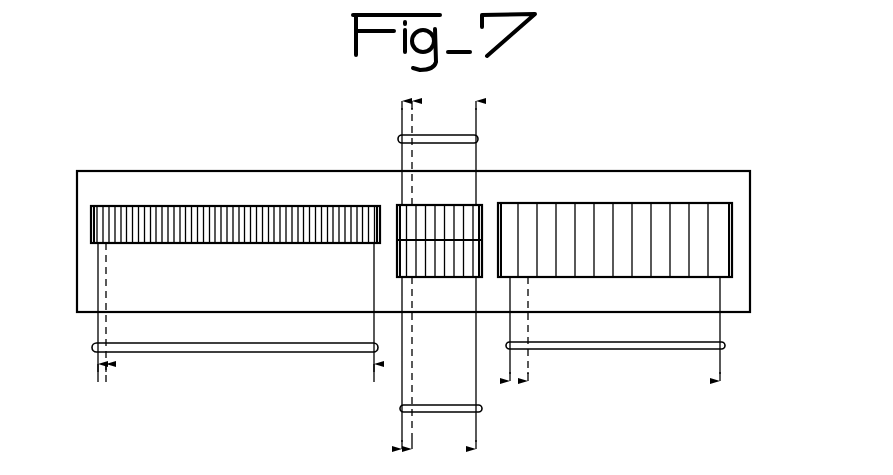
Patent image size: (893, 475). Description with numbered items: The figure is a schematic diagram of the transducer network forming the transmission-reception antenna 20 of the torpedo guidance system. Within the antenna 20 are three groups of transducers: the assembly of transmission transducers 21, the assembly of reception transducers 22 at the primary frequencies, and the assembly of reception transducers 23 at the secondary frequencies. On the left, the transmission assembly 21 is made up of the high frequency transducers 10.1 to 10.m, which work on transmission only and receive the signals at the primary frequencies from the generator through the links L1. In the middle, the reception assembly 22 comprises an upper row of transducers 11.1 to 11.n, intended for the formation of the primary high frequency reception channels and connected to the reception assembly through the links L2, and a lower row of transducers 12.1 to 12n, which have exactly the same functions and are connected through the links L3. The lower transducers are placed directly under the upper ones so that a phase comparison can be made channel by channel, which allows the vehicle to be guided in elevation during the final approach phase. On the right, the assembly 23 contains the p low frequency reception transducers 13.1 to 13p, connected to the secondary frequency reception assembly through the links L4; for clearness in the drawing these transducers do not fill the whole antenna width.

The transmission-reception antenna 20 is at (413, 227).
The high frequency transducer 10.1 is at (98, 206).
The high frequency transducer 10.m is at (374, 206).
The assembly of transmission transducers 21 is at (197, 243).
The transducer 11.1 is at (400, 268).
The transducer 11.n is at (478, 264).
The transducer 12.1 is at (398, 205).
The transducer 12n is at (482, 205).
The assembly of reception transducers at the primary frequencies 22 is at (455, 202).
The low frequency reception transducer 13.1 is at (510, 203).
The low frequency reception transducer 13p is at (718, 203).
The assembly of reception transducers at the secondary frequencies 23 is at (588, 283).
The links L1 is at (92, 349).
The links L2 is at (459, 133).
The links L3 is at (400, 409).
The links L4 is at (725, 345).